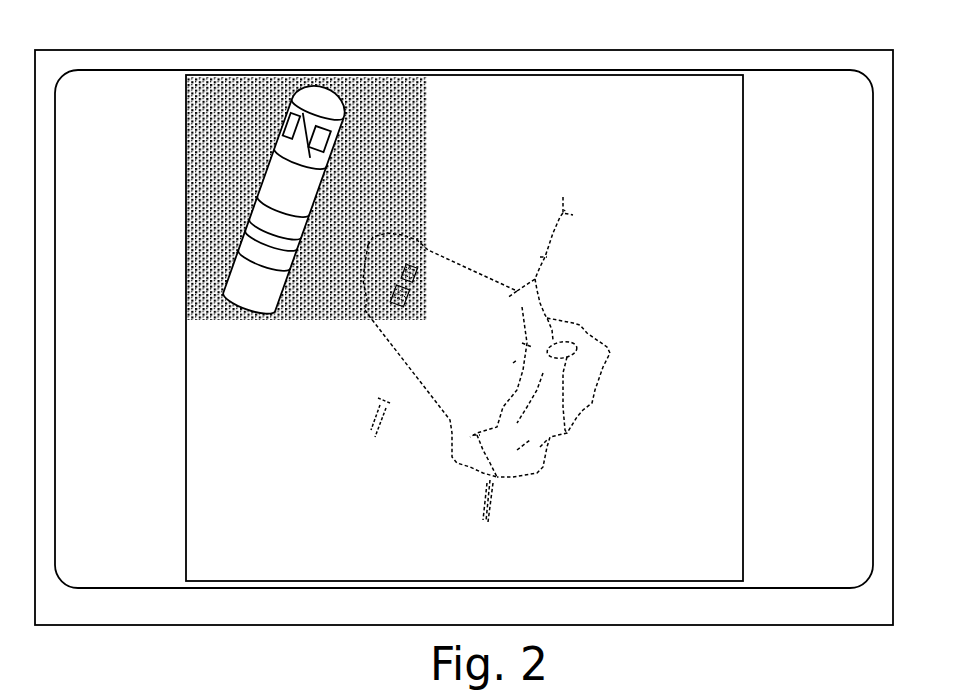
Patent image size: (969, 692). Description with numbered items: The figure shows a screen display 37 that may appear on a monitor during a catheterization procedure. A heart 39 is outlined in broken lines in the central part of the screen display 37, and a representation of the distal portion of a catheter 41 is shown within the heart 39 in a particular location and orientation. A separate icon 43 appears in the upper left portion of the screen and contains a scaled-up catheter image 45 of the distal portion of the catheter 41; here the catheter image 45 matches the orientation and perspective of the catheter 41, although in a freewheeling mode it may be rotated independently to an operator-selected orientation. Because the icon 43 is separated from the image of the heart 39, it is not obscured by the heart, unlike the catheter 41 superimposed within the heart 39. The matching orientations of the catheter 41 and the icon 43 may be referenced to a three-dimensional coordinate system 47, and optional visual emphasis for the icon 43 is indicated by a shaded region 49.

The screen display 37 is at (88, 50).
The heart 39 is at (580, 325).
The catheter 41 is at (412, 273).
The icon 43 is at (186, 192).
The catheter image 45 is at (238, 126).
The 3-dimensional coordinate system 47 is at (385, 403).
The shaded region 49 is at (365, 152).